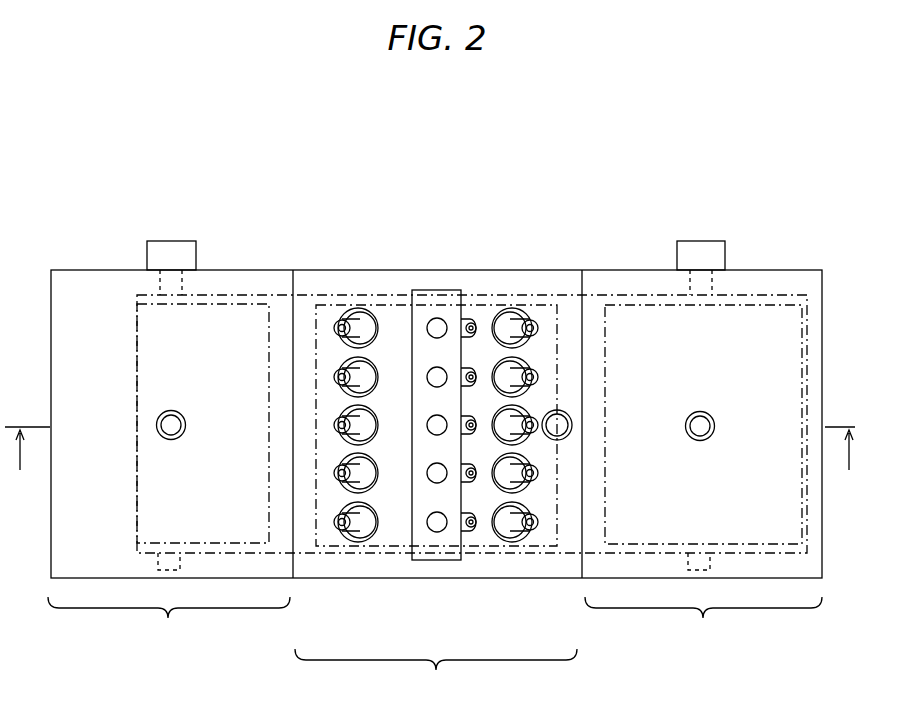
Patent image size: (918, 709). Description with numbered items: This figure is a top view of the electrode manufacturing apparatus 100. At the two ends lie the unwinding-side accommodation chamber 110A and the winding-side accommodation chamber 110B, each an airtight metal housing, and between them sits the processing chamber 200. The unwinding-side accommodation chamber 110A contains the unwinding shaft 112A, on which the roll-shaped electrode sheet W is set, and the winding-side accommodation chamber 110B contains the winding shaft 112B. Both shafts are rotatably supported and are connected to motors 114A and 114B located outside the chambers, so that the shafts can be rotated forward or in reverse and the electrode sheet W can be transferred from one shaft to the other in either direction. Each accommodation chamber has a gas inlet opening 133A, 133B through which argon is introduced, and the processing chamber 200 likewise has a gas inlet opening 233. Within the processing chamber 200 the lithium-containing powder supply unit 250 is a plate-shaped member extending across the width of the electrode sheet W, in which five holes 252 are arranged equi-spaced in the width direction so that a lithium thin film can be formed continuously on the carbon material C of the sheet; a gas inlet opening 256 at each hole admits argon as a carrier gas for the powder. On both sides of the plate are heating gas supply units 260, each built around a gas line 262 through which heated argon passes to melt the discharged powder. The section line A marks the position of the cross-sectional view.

The electrode manufacturing apparatus 100 is at (88, 102).
The unwinding-side accommodation chamber 110A is at (703, 626).
The winding-side accommodation chamber 110B is at (169, 626).
The unwinding shaft 112A is at (708, 292).
The winding shaft 112B is at (160, 293).
The motor 114A is at (686, 241).
The motor 114B is at (178, 241).
The gas inlet opening 133A is at (704, 411).
The gas inlet opening 133B is at (176, 411).
The processing chamber 200 is at (436, 674).
The gas inlet opening 233 is at (570, 426).
The lithium-containing powder supply unit 250 is at (430, 290).
The hole 252 is at (440, 318).
The gas inlet opening 256 is at (470, 318).
The heating gas supply unit 260 is at (372, 310).
The gas line 262 is at (336, 320).
The carbon material C is at (232, 295).
The electrode sheet W is at (779, 300).
The section line A is at (430, 464).